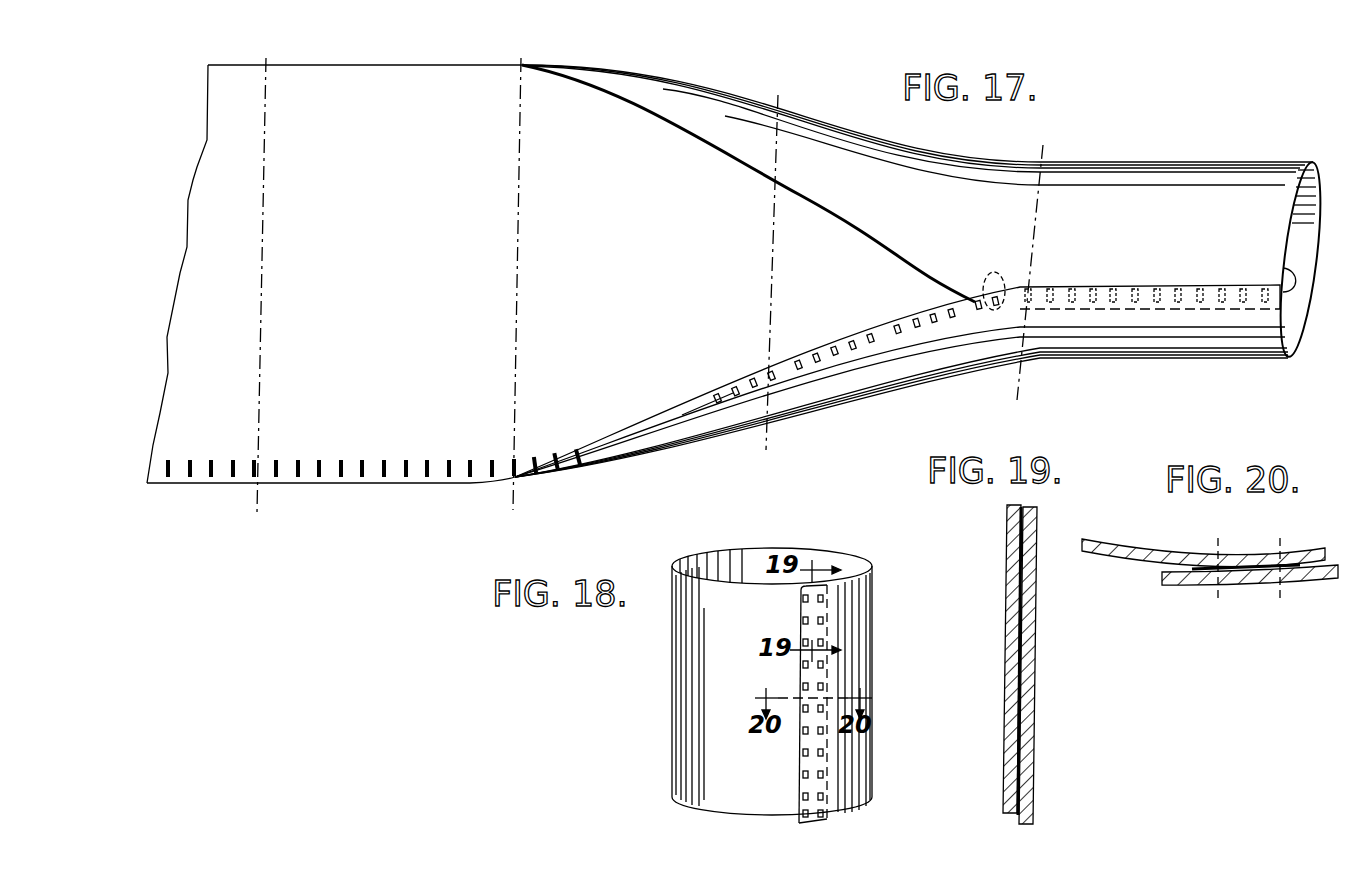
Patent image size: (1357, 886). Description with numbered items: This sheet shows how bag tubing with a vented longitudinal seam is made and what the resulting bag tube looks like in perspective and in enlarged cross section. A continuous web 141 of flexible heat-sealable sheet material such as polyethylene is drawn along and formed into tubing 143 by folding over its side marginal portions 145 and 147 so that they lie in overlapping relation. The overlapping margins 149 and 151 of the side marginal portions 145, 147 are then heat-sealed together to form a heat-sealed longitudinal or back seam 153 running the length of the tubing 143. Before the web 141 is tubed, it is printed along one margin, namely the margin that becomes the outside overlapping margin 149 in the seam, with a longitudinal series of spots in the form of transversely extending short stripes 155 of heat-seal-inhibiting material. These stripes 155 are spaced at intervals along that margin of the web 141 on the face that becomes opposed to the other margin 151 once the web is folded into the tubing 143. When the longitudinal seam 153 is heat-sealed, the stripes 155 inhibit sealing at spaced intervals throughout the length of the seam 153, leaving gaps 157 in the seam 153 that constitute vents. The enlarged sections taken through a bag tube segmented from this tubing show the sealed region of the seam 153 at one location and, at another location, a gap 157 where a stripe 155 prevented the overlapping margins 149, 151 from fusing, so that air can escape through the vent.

In FIG. 17, the continuous web 141 is at (172, 248).
In FIG. 17, the tubing 143 is at (1200, 152).
In FIG. 17, the side marginal portion 145 is at (1190, 330).
In FIG. 17, the side marginal portion 147 is at (1140, 192).
In FIG. 17, the overlapping margin 149 is at (1100, 286).
In FIG. 18, the overlapping margin 149 is at (801, 610).
In FIG. 19, the overlapping margin 149 is at (1040, 633).
In FIG. 20, the overlapping margin 149 is at (1175, 580).
In FIG. 17, the overlapping margin 151 is at (1284, 268).
In FIG. 19, the overlapping margin 151 is at (1010, 634).
In FIG. 20, the overlapping margin 151 is at (1300, 560).
In FIG. 17, the longitudinal seam 153 is at (1192, 296).
In FIG. 18, the longitudinal seam 153 is at (812, 803).
In FIG. 19, the longitudinal seam 153 is at (1012, 567).
In FIG. 20, the longitudinal seam 153 is at (1218, 600).
In FIG. 17, the stripes of heat-seal-inhibiting material 155 is at (340, 462).
In FIG. 18, the stripes of heat-seal-inhibiting material 155 is at (806, 741).
In FIG. 20, the stripes of heat-seal-inhibiting material 155 is at (1203, 583).
In FIG. 19, the gaps 157 is at (1012, 534).
In FIG. 20, the gaps 157 is at (1250, 560).